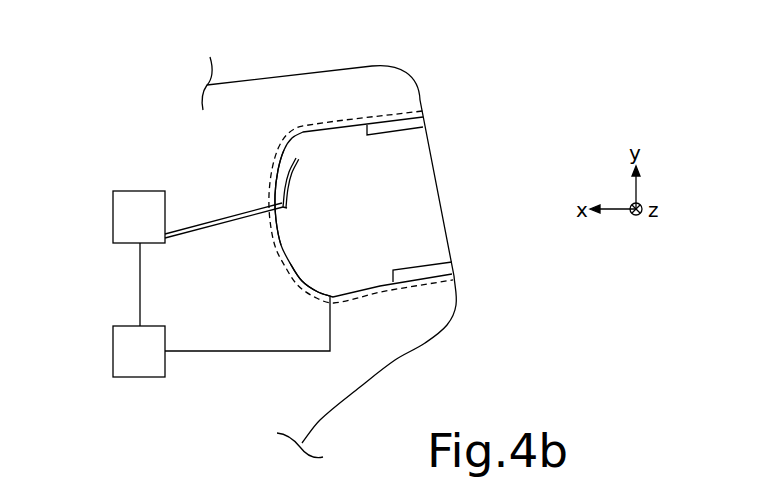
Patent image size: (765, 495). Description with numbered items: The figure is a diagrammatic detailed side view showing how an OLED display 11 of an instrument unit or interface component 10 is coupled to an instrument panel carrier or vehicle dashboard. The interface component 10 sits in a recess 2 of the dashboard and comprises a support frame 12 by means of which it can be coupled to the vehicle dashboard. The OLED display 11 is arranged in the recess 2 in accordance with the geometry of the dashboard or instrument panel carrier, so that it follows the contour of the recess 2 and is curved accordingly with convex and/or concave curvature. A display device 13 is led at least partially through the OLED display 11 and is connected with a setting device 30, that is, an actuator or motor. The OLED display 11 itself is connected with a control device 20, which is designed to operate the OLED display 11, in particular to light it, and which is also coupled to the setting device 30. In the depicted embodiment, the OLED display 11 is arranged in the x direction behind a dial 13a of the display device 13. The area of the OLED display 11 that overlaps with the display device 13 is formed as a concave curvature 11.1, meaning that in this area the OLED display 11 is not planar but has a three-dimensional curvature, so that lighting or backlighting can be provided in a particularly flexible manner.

The interface component 10 is at (307, 128).
The recess 2 is at (405, 208).
The OLED display 11 is at (283, 236).
The concave curvature 11.1 is at (300, 273).
The support frame 12 is at (423, 118).
The display device 13 is at (291, 165).
The dial 13a is at (281, 205).
The setting device 30 is at (139, 258).
The control device 20 is at (221, 337).